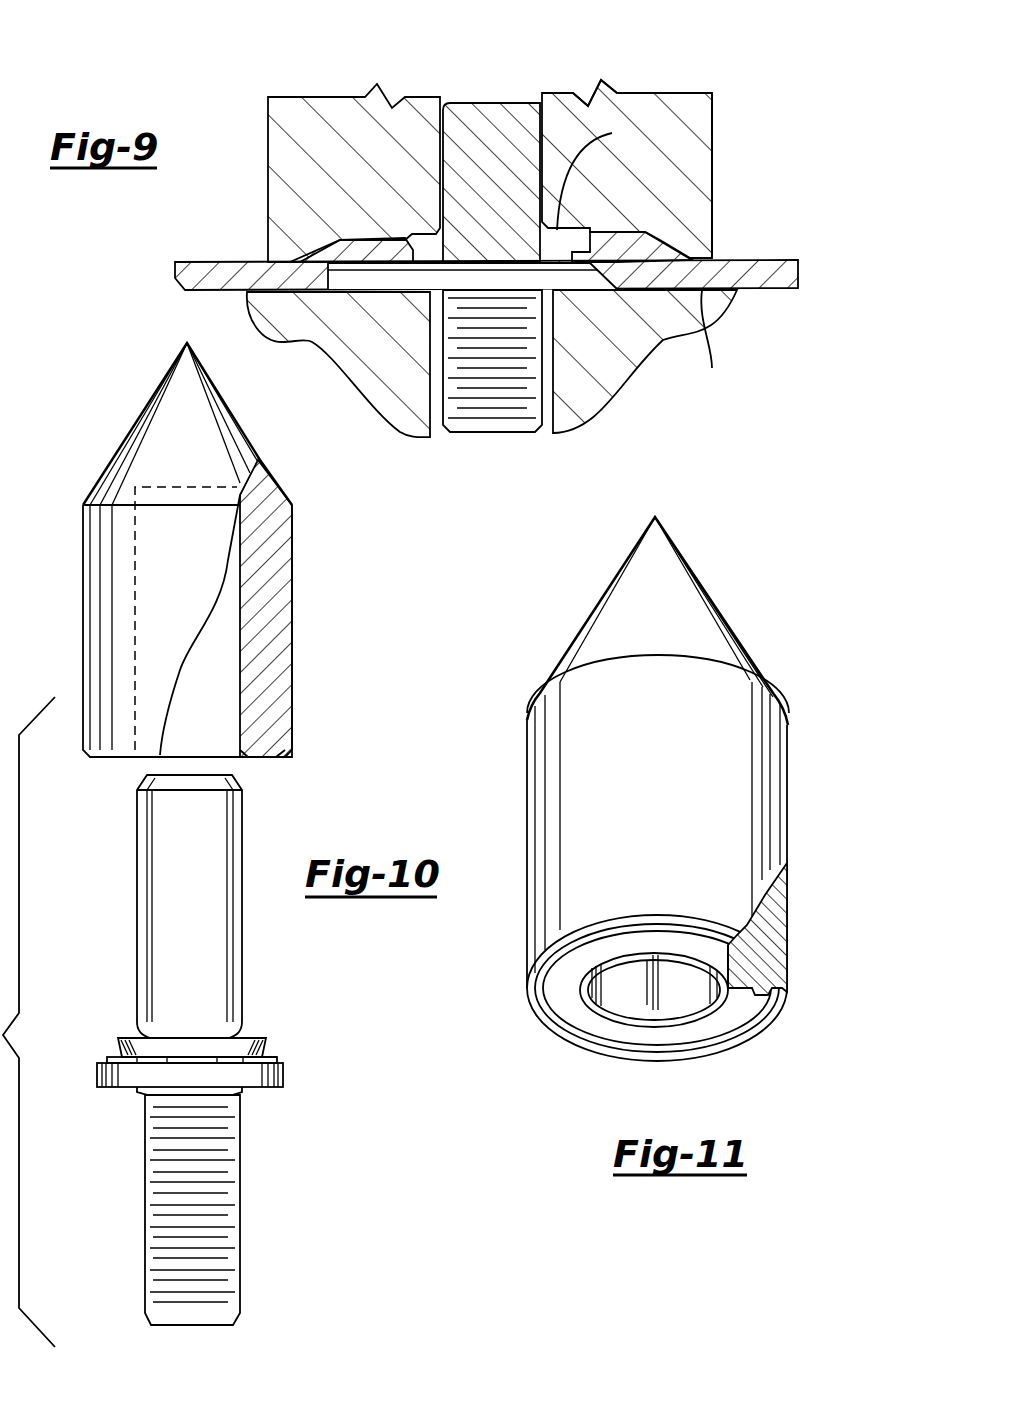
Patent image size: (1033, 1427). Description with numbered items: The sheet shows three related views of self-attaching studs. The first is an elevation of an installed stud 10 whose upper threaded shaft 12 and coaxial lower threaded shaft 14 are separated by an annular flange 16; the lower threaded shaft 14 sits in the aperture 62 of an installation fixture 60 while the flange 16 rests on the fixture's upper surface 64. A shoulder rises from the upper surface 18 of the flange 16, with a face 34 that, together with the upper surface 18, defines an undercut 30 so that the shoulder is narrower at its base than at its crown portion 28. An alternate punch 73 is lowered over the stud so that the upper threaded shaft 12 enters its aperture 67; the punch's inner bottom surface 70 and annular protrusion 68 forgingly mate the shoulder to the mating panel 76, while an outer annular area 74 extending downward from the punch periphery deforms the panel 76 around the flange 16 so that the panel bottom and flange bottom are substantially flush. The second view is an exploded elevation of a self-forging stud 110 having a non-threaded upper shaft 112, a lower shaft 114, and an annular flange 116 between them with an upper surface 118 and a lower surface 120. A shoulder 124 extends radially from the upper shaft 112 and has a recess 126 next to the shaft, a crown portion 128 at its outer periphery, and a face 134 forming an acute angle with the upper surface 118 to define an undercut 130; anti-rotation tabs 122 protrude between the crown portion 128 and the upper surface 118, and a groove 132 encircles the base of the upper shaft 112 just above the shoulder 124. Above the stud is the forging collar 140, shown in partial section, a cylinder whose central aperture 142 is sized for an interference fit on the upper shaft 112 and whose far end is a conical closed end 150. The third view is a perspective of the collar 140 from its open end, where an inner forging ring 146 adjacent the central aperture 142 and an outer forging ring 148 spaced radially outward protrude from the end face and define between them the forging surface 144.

In FIG. 9, the stud 10 is at (631, 146).
In FIG. 9, the upper threaded shaft 12 is at (497, 275).
In FIG. 9, the lower threaded shaft 14 is at (500, 436).
In FIG. 9, the annular flange 16 is at (286, 340).
In FIG. 9, the upper surface of flange 18 is at (475, 260).
In FIG. 9, the crown portion 28 is at (575, 240).
In FIG. 9, the undercut 30 is at (395, 262).
In FIG. 9, the face of shoulder 34 is at (375, 250).
In FIG. 9, the installation fixture 60 is at (665, 361).
In FIG. 9, the aperture 62 is at (446, 444).
In FIG. 9, the upper surface of installation fixture 64 is at (737, 292).
In FIG. 9, the aperture 67 is at (399, 135).
In FIG. 9, the annular protrusion 68 is at (392, 238).
In FIG. 9, the inner bottom surface 70 is at (597, 175).
In FIG. 9, the alternate punch 73 is at (712, 138).
In FIG. 9, the outer annular area 74 is at (712, 230).
In FIG. 9, the mating panel 76 is at (502, 240).
In FIG. 10, the self-forging stud 110 is at (209, 1065).
In FIG. 10, the upper shaft 112 is at (138, 845).
In FIG. 10, the lower shaft 114 is at (240, 1222).
In FIG. 10, the annular flange 116 is at (285, 1084).
In FIG. 10, the upper surface of flange 118 is at (193, 1058).
In FIG. 10, the lower surface of flange 120 is at (133, 1090).
In FIG. 10, the anti-rotation tabs 122 is at (103, 1057).
In FIG. 10, the shoulder 124 is at (118, 1039).
In FIG. 10, the recess 126 is at (255, 1027).
In FIG. 10, the crown portion 128 is at (266, 1040).
In FIG. 10, the undercut 130 is at (120, 1054).
In FIG. 10, the groove 132 is at (120, 1023).
In FIG. 10, the face of shoulder 134 is at (272, 1047).
In FIG. 10, the forging collar 140 is at (232, 593).
In FIG. 11, the forging collar 140 is at (638, 861).
In FIG. 10, the central aperture 142 is at (210, 730).
In FIG. 11, the central aperture 142 is at (648, 1012).
In FIG. 10, the forging surface 144 is at (258, 735).
In FIG. 11, the forging surface 144 is at (567, 993).
In FIG. 10, the inner forging ring 146 is at (240, 757).
In FIG. 11, the inner forging ring 146 is at (713, 1015).
In FIG. 10, the outer forging ring 148 is at (285, 750).
In FIG. 11, the outer forging ring 148 is at (775, 1000).
In FIG. 10, the conical closed end 150 is at (143, 412).
In FIG. 11, the conical closed end 150 is at (707, 592).